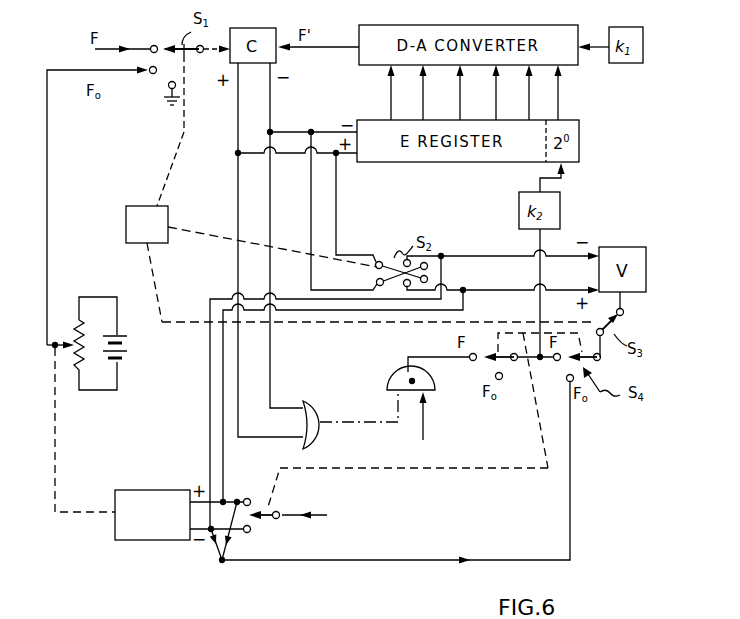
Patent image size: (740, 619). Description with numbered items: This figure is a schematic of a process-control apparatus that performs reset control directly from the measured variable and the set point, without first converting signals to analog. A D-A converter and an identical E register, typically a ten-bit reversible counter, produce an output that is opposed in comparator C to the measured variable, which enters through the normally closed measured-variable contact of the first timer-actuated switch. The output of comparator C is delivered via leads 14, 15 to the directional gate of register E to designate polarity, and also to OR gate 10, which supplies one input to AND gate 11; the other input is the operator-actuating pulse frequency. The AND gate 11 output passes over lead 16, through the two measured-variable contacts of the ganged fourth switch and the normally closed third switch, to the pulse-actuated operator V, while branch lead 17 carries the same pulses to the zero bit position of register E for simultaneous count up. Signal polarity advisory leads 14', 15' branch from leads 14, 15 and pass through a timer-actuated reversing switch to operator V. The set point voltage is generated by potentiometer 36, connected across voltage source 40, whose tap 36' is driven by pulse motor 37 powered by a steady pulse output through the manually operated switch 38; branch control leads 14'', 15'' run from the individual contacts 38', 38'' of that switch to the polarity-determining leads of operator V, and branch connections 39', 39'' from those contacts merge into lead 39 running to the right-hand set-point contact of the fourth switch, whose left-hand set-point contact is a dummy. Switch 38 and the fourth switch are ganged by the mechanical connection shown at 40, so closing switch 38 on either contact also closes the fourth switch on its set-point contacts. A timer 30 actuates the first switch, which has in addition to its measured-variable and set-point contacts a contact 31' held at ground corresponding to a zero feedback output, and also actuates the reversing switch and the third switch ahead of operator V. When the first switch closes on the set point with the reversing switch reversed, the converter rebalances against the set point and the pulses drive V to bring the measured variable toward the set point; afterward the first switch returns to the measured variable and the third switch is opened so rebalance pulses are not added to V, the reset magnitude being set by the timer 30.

The OR gate 10 is at (312, 404).
The AND gate 11 is at (393, 378).
The lead 14 is at (313, 235).
The lead 15 is at (297, 250).
The signal polarity advisory lead 14' is at (329, 211).
The signal polarity advisory lead 15' is at (356, 207).
The branch control lead 14'' is at (307, 392).
The branch control lead 15'' is at (317, 396).
The pulse driving signal supply lead 16 is at (437, 357).
The branch lead 17 is at (538, 305).
The timer 30 is at (127, 207).
The contact 31' is at (154, 99).
The potentiometer 36 is at (93, 324).
The tap 36' is at (43, 371).
The pulse motor 37 is at (148, 541).
The manually operated switch 38 is at (296, 503).
The switch contact 38' is at (272, 540).
The switch contact 38'' is at (258, 482).
The lead 39 is at (395, 473).
The branch connection 39' is at (206, 556).
The branch connection 39'' is at (246, 545).
The voltage source 40 is at (129, 353).